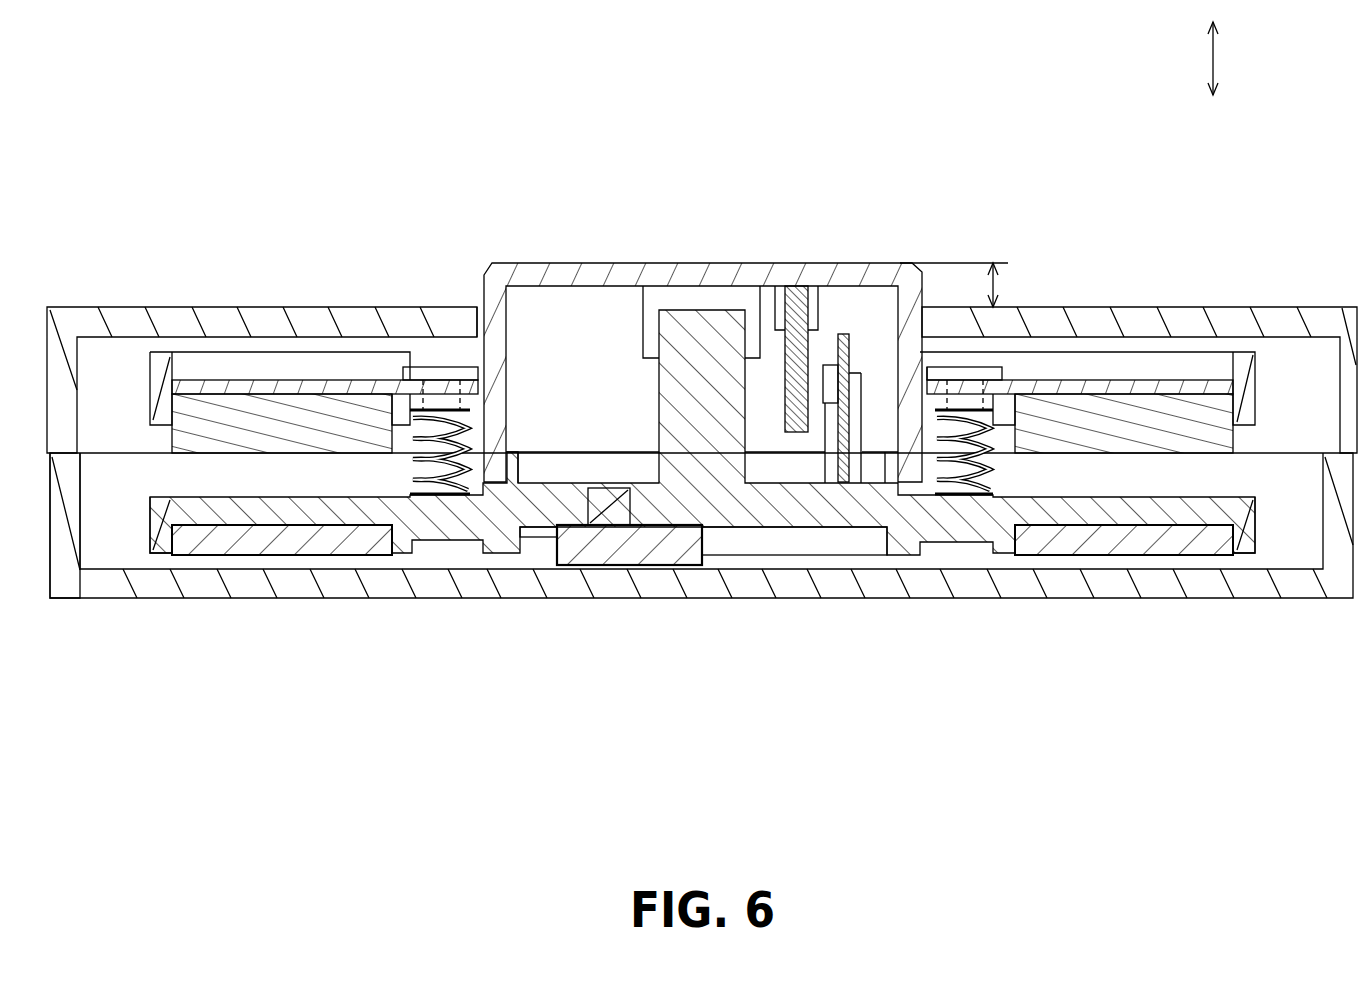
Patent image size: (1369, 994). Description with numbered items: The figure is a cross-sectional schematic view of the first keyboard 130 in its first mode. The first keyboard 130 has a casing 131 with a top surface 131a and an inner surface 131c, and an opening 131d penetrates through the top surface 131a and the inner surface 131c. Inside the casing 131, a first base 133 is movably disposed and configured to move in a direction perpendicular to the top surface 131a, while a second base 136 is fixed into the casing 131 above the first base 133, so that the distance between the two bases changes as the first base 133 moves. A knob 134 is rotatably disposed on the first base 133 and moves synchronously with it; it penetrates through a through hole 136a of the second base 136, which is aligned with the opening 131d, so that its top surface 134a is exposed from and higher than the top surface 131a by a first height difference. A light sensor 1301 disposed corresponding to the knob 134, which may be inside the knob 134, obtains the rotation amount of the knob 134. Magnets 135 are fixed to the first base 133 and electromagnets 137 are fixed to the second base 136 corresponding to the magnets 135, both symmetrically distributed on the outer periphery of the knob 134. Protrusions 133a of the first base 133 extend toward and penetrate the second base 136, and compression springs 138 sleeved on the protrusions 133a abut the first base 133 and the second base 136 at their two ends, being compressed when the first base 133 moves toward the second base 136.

The first keyboard 130 is at (1238, 632).
The casing 131 is at (147, 587).
The top surface 131a is at (391, 307).
The inner surface 131c is at (115, 338).
The opening 131d is at (482, 325).
The first base 133 is at (722, 515).
The protrusions 133a is at (440, 420).
The knob 134 is at (813, 273).
The top surface 134a is at (704, 262).
The light sensor 1301 is at (833, 352).
The magnet 135 is at (288, 545).
The second base 136 is at (1122, 387).
The through hole 136a is at (480, 395).
The electromagnet 137 is at (250, 417).
The springs 138 is at (440, 420).